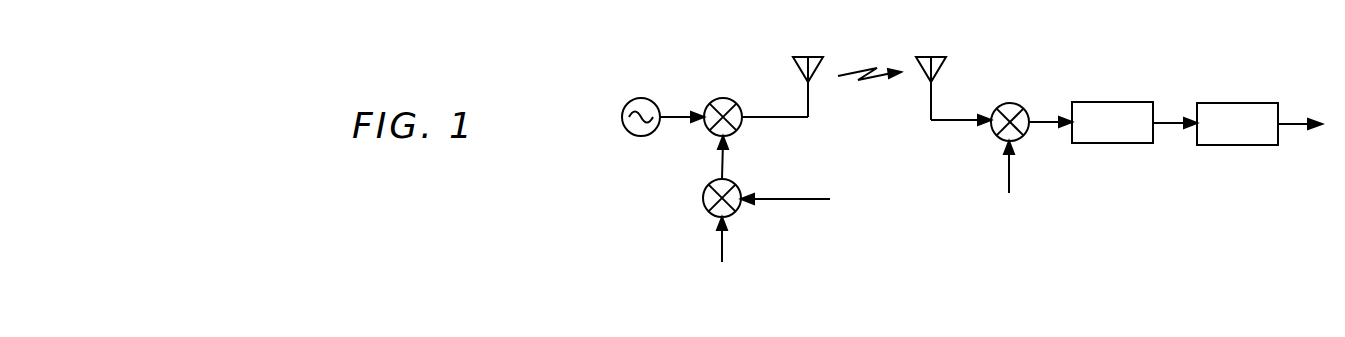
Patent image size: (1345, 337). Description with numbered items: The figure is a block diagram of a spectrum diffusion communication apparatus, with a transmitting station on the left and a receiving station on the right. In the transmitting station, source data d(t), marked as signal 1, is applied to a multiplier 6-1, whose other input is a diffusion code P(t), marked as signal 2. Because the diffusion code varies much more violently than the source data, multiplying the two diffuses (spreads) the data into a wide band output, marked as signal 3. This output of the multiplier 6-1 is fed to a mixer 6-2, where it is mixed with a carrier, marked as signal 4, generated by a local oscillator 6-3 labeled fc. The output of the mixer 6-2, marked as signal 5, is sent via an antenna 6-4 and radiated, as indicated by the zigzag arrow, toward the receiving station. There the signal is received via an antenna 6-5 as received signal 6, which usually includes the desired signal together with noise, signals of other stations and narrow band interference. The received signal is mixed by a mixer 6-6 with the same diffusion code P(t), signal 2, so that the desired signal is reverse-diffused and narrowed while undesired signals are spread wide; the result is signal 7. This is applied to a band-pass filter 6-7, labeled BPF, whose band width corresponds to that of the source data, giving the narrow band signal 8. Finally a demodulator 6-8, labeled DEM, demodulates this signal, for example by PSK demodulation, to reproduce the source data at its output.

The multiplier 6-1 is at (702, 201).
The mixer 6-2 is at (722, 98).
The local oscillator 6-3 is at (645, 97).
The antenna 6-4 is at (850, 45).
The antenna 6-5 is at (947, 63).
The mixer 6-6 is at (1011, 103).
The band-pass filter 6-7 is at (1130, 102).
The demodulator 6-8 is at (1262, 103).
The data signal d(t) 1 is at (729, 253).
The spreading code signal P(t) 2 is at (893, 181).
The spread baseband signal 3 is at (737, 157).
The carrier signal 4 is at (682, 103).
The transmitted spread spectrum signal 5 is at (821, 92).
The received signal 6 is at (961, 107).
The despread signal 7 is at (1050, 108).
The filtered signal 8 is at (1175, 106).